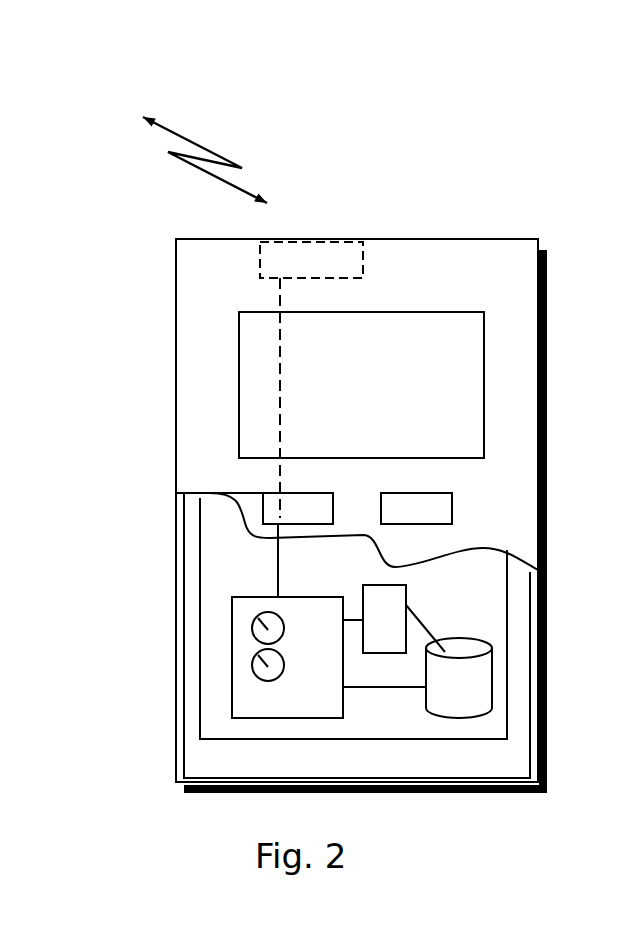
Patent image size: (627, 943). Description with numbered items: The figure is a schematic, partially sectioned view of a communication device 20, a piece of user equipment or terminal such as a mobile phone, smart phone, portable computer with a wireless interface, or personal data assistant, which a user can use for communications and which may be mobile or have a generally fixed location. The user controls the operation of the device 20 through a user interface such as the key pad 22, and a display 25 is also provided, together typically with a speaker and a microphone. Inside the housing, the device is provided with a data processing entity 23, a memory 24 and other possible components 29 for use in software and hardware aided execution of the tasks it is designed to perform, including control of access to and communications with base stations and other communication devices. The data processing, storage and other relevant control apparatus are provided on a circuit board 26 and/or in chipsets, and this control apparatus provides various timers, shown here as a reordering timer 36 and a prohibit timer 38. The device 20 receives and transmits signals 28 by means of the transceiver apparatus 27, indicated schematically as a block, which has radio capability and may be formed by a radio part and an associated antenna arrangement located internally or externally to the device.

The communication device 20 is at (180, 268).
The key pad 22 is at (267, 510).
The data processing entity 23 is at (243, 610).
The memory 24 is at (447, 683).
The display 25 is at (270, 360).
The circuit board 26 is at (265, 707).
The transceiver apparatus 27 is at (292, 258).
The signals 28 is at (168, 128).
The other components 29 is at (383, 602).
The reordering timer 36 is at (253, 622).
The prohibit timer 38 is at (253, 653).